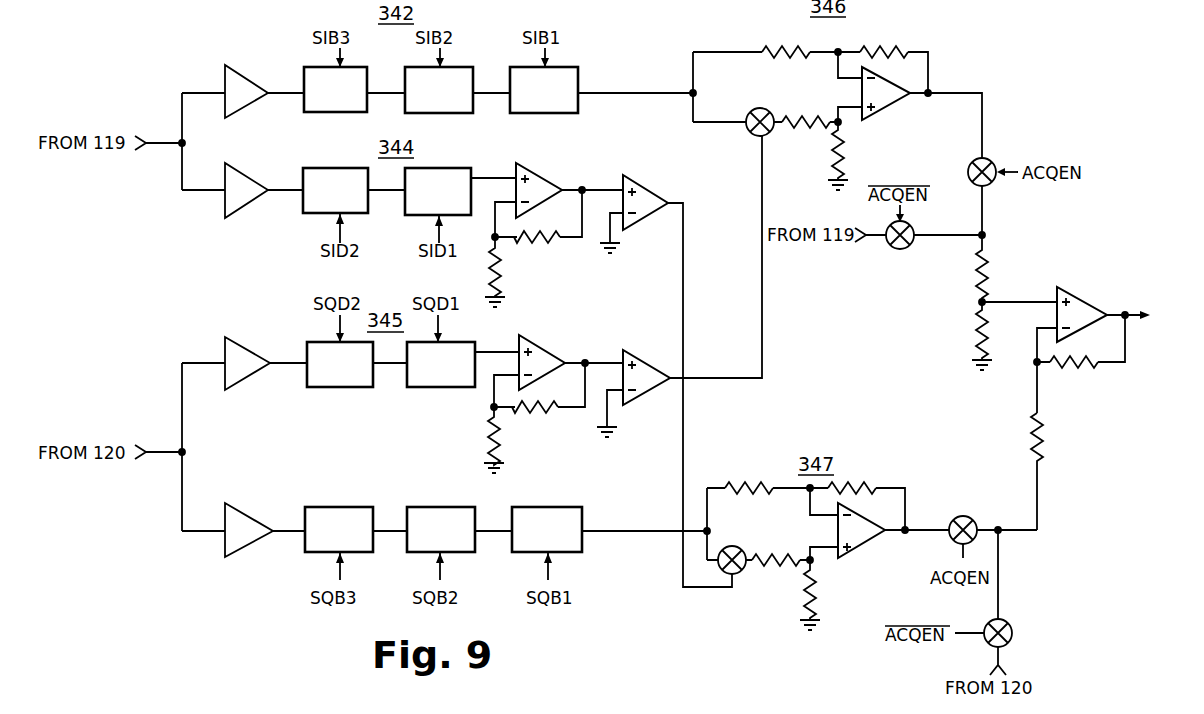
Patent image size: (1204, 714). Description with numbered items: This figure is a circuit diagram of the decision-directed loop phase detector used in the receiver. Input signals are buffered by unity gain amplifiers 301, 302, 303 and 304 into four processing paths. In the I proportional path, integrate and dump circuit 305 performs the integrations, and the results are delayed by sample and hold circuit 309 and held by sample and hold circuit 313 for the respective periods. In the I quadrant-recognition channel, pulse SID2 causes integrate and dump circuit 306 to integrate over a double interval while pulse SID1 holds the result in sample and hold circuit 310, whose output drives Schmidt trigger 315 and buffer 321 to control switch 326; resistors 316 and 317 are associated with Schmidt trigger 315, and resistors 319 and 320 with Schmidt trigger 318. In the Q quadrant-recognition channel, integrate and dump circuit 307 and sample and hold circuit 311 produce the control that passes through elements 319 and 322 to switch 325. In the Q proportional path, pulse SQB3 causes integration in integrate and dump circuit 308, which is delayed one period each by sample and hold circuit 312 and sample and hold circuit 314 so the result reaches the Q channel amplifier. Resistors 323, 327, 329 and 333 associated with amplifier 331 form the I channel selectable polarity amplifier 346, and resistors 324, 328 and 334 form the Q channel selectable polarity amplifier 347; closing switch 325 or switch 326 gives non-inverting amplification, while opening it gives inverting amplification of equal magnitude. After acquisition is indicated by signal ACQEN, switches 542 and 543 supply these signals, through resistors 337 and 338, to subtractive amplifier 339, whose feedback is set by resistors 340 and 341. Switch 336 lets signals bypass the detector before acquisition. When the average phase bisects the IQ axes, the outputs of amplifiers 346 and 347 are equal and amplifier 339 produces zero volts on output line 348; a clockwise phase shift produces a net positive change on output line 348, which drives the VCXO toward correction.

The unity gain amplifier 301 is at (246, 118).
The unity gain amplifier 302 is at (246, 216).
The unity gain amplifier 303 is at (240, 388).
The unity gain amplifier 304 is at (248, 553).
The integrate and dump circuit 305 is at (330, 112).
The integrate and dump circuit 306 is at (334, 168).
The integrate and dump circuit 307 is at (350, 387).
The integrate and dump circuit 308 is at (322, 552).
The sample and hold circuit 309 is at (458, 113).
The sample and hold circuit 310 is at (460, 168).
The sample and hold circuit 311 is at (438, 387).
The sample and hold circuit 312 is at (442, 507).
The sample and hold circuit 313 is at (560, 113).
The sample and hold circuit 314 is at (564, 507).
The Schmidt trigger 315 is at (540, 178).
The feedback resistor 316 is at (548, 243).
The resistor 317 is at (502, 270).
The amplifier 318 is at (533, 347).
The Schmidt trigger element 319 is at (535, 413).
The resistor 320 is at (488, 430).
The buffer 321 is at (640, 190).
The buffer element 322 is at (652, 345).
The resistor 323 is at (768, 48).
The resistor 324 is at (752, 482).
The switch 325 is at (752, 112).
The switch 326 is at (752, 538).
The resistor 327 is at (795, 128).
The resistor 328 is at (778, 568).
The resistor 329 is at (845, 140).
The amplifier 331 is at (885, 108).
The resistor 333 is at (887, 48).
The resistor 334 is at (862, 482).
The switch 336 is at (1010, 626).
The resistor 337 is at (972, 278).
The resistor 338 is at (975, 332).
The subtractive amplifier 339 is at (1095, 282).
The feedback resistor 340 is at (1085, 370).
The resistor 341 is at (1043, 440).
The selectable polarity amplifier 346 is at (810, 87).
The selectable polarity amplifier 347 is at (806, 524).
The output line 348 is at (1145, 322).
The switch 542 is at (990, 160).
The switch 543 is at (960, 516).